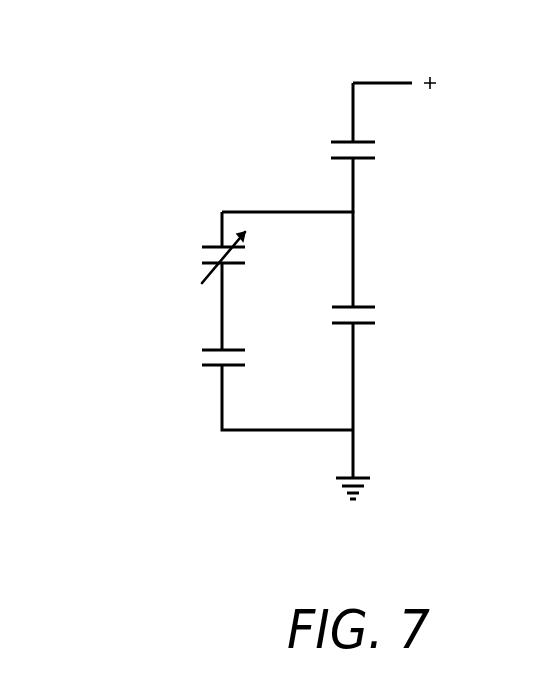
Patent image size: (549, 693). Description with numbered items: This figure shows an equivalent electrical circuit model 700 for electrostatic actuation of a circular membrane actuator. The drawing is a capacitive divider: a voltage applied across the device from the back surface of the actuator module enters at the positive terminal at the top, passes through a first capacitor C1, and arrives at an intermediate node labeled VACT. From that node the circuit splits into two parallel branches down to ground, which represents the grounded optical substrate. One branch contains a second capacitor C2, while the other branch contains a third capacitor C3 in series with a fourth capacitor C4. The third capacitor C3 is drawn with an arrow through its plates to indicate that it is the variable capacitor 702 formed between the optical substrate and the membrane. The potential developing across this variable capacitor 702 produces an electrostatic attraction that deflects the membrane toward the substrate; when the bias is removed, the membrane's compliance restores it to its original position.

The equivalent electrical circuit model 700 is at (55, 57).
The variable capacitor 702 is at (203, 245).
The capacitor C1 is at (372, 152).
The capacitor C2 is at (372, 318).
The variable capacitor C3 is at (206, 257).
The capacitor C4 is at (206, 360).
The actuation voltage node VACT is at (384, 217).